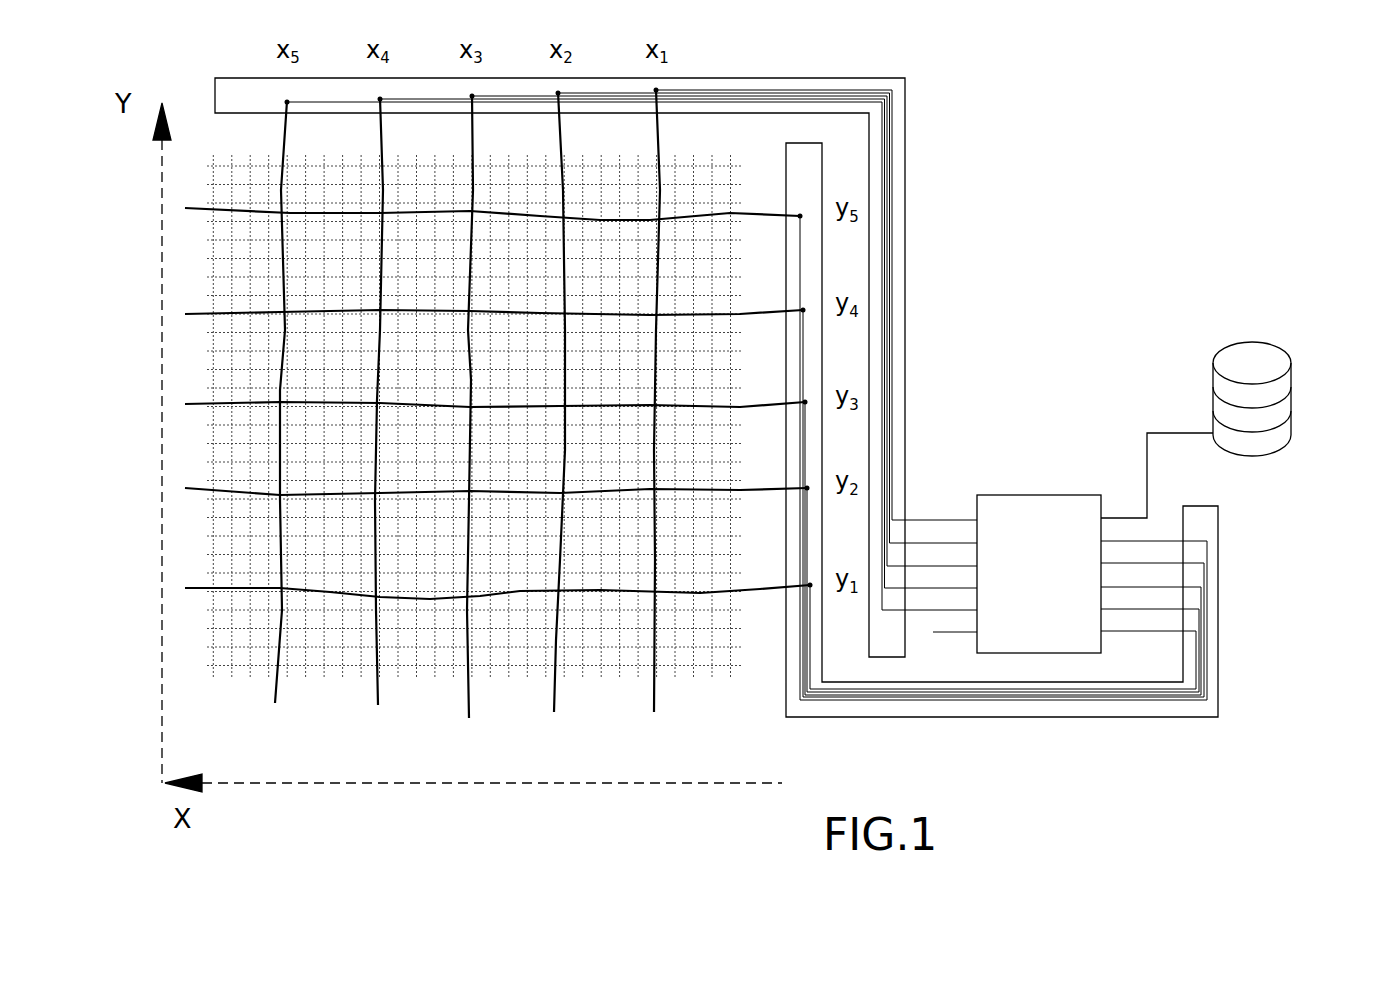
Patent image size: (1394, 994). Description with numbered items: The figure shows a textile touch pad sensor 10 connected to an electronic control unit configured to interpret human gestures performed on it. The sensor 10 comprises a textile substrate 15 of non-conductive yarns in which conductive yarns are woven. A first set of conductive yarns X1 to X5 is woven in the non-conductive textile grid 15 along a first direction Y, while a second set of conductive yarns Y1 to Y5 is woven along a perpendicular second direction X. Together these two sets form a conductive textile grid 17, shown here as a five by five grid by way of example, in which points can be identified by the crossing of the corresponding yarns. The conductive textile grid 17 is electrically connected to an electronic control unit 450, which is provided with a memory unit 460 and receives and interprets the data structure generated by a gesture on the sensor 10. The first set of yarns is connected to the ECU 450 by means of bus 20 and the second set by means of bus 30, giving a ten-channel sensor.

The textile touch pad sensor 10 is at (250, 690).
The textile substrate 15 is at (592, 667).
The conductive textile grid 17 is at (455, 695).
The bus 20 is at (757, 78).
The bus 30 is at (1030, 717).
The electronic control unit 450 is at (1066, 587).
The memory unit 460 is at (1292, 400).